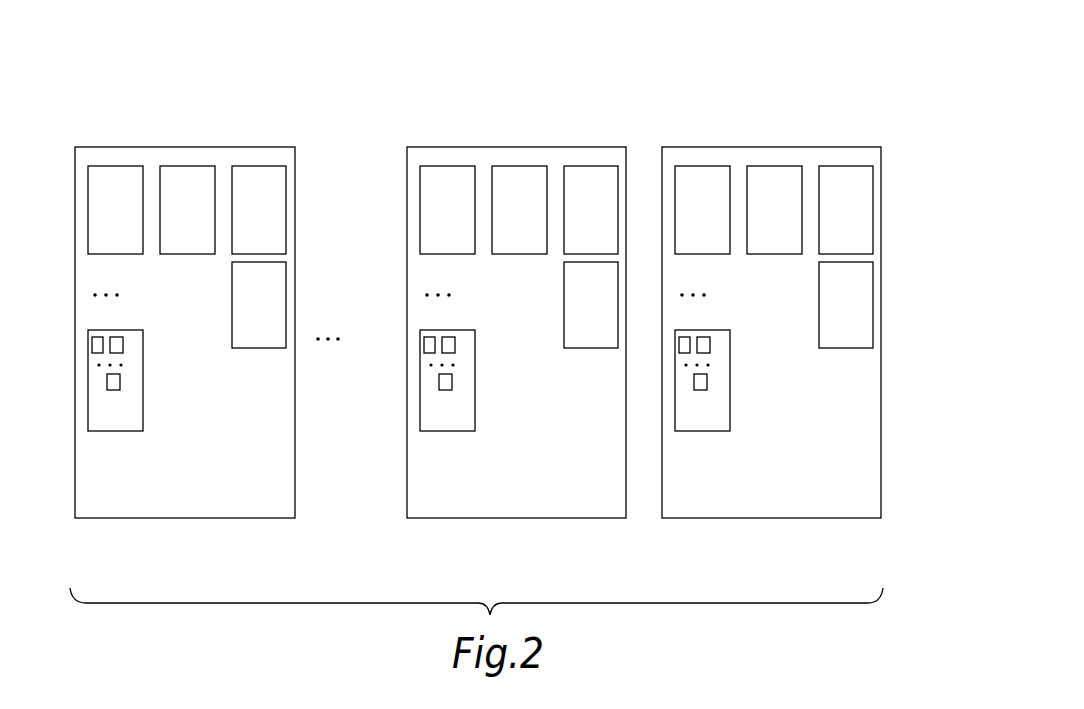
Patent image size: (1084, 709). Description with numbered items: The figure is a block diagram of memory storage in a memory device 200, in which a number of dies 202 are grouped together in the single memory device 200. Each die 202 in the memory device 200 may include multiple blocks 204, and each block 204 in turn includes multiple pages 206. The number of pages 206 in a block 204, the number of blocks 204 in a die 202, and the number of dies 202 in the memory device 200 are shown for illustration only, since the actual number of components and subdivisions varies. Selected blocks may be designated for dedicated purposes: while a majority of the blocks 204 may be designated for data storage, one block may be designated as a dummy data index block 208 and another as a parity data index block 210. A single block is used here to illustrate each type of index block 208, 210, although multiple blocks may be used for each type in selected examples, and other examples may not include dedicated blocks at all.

The memory device 200 is at (877, 61).
The die 202 is at (186, 520).
The block 204 is at (117, 166).
The page 206 is at (120, 383).
The dummy data index block 208 is at (260, 166).
The parity data index block 210 is at (287, 272).